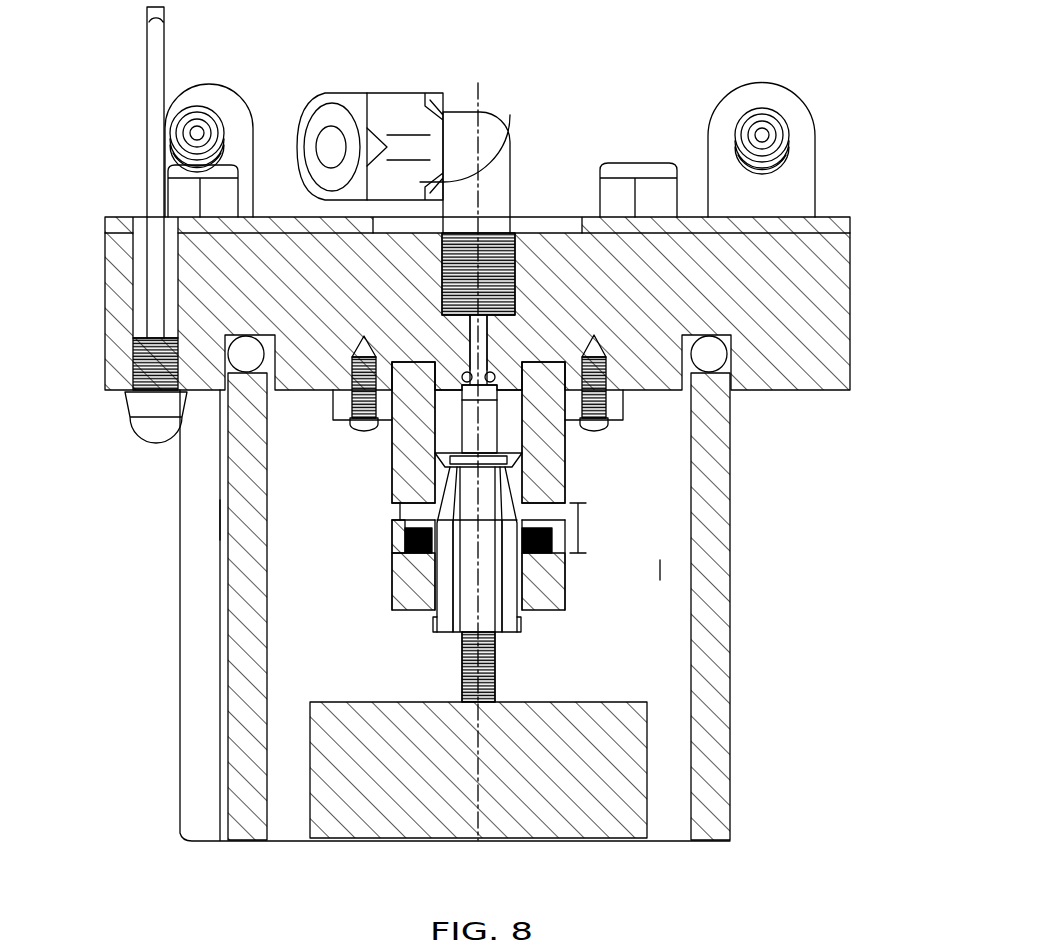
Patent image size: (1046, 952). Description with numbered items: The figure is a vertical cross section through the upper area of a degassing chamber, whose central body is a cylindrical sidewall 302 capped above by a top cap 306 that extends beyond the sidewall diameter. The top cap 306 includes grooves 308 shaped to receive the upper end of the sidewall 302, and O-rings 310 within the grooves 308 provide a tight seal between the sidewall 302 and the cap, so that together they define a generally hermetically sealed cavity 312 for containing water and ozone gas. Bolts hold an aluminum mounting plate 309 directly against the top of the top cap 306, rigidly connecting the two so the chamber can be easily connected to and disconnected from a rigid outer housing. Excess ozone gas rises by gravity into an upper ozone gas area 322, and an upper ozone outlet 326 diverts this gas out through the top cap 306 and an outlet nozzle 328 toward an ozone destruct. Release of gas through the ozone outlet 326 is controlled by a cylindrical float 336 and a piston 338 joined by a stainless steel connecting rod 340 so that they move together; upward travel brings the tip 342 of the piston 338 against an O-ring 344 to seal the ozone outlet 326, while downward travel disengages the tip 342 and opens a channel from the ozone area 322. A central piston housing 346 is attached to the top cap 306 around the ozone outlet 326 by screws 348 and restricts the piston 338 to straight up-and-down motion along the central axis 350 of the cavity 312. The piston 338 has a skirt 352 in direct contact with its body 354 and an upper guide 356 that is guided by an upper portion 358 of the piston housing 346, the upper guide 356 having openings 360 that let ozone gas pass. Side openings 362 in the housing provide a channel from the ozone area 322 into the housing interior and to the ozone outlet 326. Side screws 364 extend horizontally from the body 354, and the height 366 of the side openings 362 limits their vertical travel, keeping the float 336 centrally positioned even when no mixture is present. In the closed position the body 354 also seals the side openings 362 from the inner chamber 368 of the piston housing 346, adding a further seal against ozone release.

The cylindrical sidewall 302 is at (713, 692).
The top cap 306 is at (833, 275).
The grooves 308 is at (222, 338).
The mounting plate 309 is at (690, 217).
The O-rings 310 is at (247, 348).
The cavity 312 is at (668, 573).
The upper ozone gas area 322 is at (285, 538).
The upper ozone outlet 326 is at (465, 372).
The outlet nozzle 328 is at (343, 110).
The cylindrical float 336 is at (617, 792).
The piston 338 is at (508, 470).
The connecting rod 340 is at (495, 668).
The tip 342 is at (496, 373).
The O-ring 344 is at (445, 404).
The central piston housing 346 is at (545, 360).
The screws 348 is at (593, 430).
The central axis 350 is at (512, 318).
The skirt 352 is at (567, 588).
The body 354 is at (492, 607).
The upper guide 356 is at (410, 540).
The upper portion 358 is at (607, 417).
The openings 360 is at (352, 366).
The side openings 362 is at (400, 510).
The side screws 364 is at (465, 466).
The height 366 is at (580, 532).
The inner chamber 368 is at (470, 390).